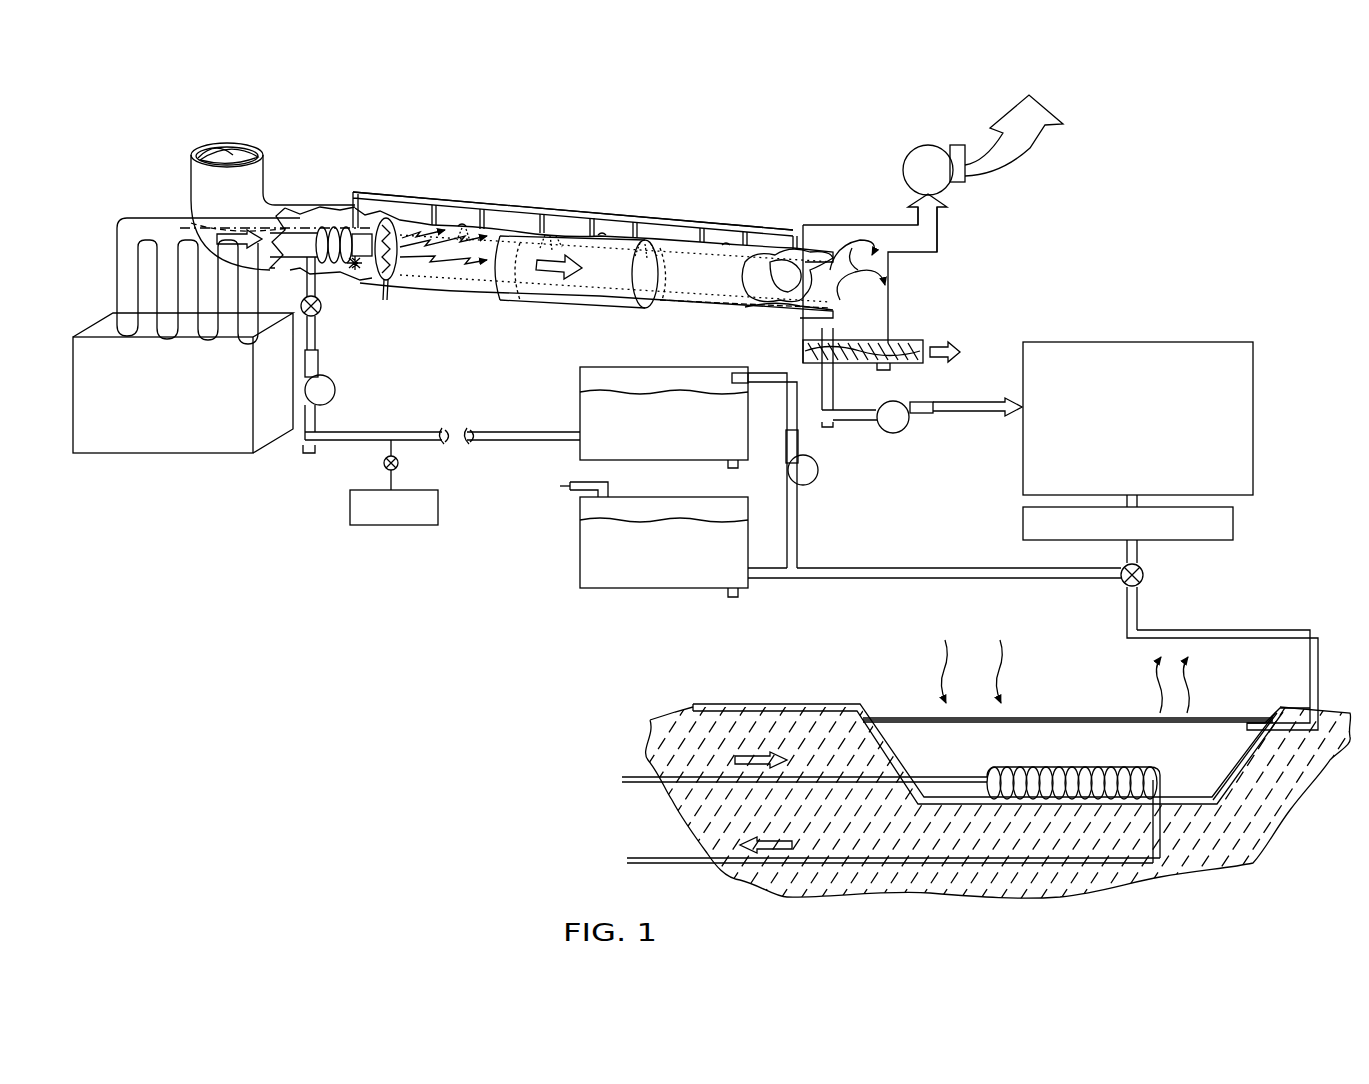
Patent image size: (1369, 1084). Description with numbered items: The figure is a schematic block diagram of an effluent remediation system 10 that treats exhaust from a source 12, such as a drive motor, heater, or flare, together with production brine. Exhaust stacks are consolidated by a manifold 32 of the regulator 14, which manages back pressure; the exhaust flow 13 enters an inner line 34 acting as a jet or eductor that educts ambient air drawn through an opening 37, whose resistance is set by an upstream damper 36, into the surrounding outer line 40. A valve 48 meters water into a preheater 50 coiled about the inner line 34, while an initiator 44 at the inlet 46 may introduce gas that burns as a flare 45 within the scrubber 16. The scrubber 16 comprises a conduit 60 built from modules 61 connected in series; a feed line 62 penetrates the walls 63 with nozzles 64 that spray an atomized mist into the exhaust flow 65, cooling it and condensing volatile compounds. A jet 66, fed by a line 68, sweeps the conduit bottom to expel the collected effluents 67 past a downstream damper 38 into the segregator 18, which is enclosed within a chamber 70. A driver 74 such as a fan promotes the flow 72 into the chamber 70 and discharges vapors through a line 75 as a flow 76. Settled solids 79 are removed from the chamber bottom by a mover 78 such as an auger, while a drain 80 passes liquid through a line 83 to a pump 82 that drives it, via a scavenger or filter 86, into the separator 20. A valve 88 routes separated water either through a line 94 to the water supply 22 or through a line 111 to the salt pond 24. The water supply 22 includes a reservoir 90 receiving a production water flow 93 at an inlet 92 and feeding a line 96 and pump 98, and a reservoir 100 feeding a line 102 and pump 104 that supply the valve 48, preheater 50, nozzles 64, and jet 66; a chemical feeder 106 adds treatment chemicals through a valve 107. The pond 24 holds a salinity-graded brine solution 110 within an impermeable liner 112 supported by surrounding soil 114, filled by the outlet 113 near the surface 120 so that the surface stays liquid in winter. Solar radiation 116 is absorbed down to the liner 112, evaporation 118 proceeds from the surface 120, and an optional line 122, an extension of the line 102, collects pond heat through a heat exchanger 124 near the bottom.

The system 10 is at (315, 742).
The source 12 is at (183, 383).
The exhaust flow 13 is at (215, 228).
The regulator 14 is at (178, 150).
The scrubber 16 is at (503, 158).
The segregator 18 is at (855, 223).
The separator 20 is at (1138, 424).
The water supply 22 is at (527, 538).
The salt pond 24 is at (1073, 703).
The manifold 32 is at (108, 260).
The inner line 34 is at (305, 263).
The damper 36 is at (240, 150).
The opening 37 is at (193, 146).
The downstream damper 38 is at (795, 265).
The outer line 40 is at (297, 205).
The initiator 44 is at (398, 262).
The flare 45 is at (430, 258).
The inlet 46 is at (385, 302).
The valve 48 is at (322, 312).
The preheater 50 is at (339, 222).
The conduit 60 is at (576, 272).
The modules 61 is at (433, 188).
The feed line 62 is at (625, 200).
The walls 63 is at (462, 225).
The nozzles 64 is at (550, 215).
The flow 65 is at (560, 270).
The jet 66 is at (705, 315).
The effluents 67 is at (775, 305).
The line 68 is at (665, 320).
The chamber 70 is at (888, 300).
The flow 72 is at (870, 285).
The driver 74 is at (930, 150).
The line 75 is at (932, 237).
The flow 76 is at (1030, 135).
The mover 78 is at (900, 358).
The solids 79 is at (950, 340).
The drain 80 is at (815, 345).
The pump 82 is at (908, 428).
The line 83 is at (862, 423).
The scavenger/filter 86 is at (1232, 532).
The valve 88 is at (1145, 575).
The reservoir 90 is at (664, 547).
The inlet 92 is at (610, 487).
The water flow 93 is at (568, 485).
The line 94 is at (915, 578).
The line 96 is at (798, 527).
The pump 98 is at (818, 477).
The reservoir 100 is at (664, 417).
The line 102 is at (500, 430).
The pump 104 is at (338, 395).
The chemical feeder 106 is at (350, 507).
The valve 107 is at (400, 463).
The solution 110 is at (1068, 743).
The line 111 is at (1240, 636).
The liner 112 is at (1240, 760).
The outlet 113 is at (1255, 720).
The soil 114 is at (1255, 845).
The solar radiation 116 is at (971, 650).
The evaporation 118 is at (1158, 690).
The surface 120 is at (913, 706).
The line 122 is at (640, 775).
The heat exchanger 124 is at (1055, 768).